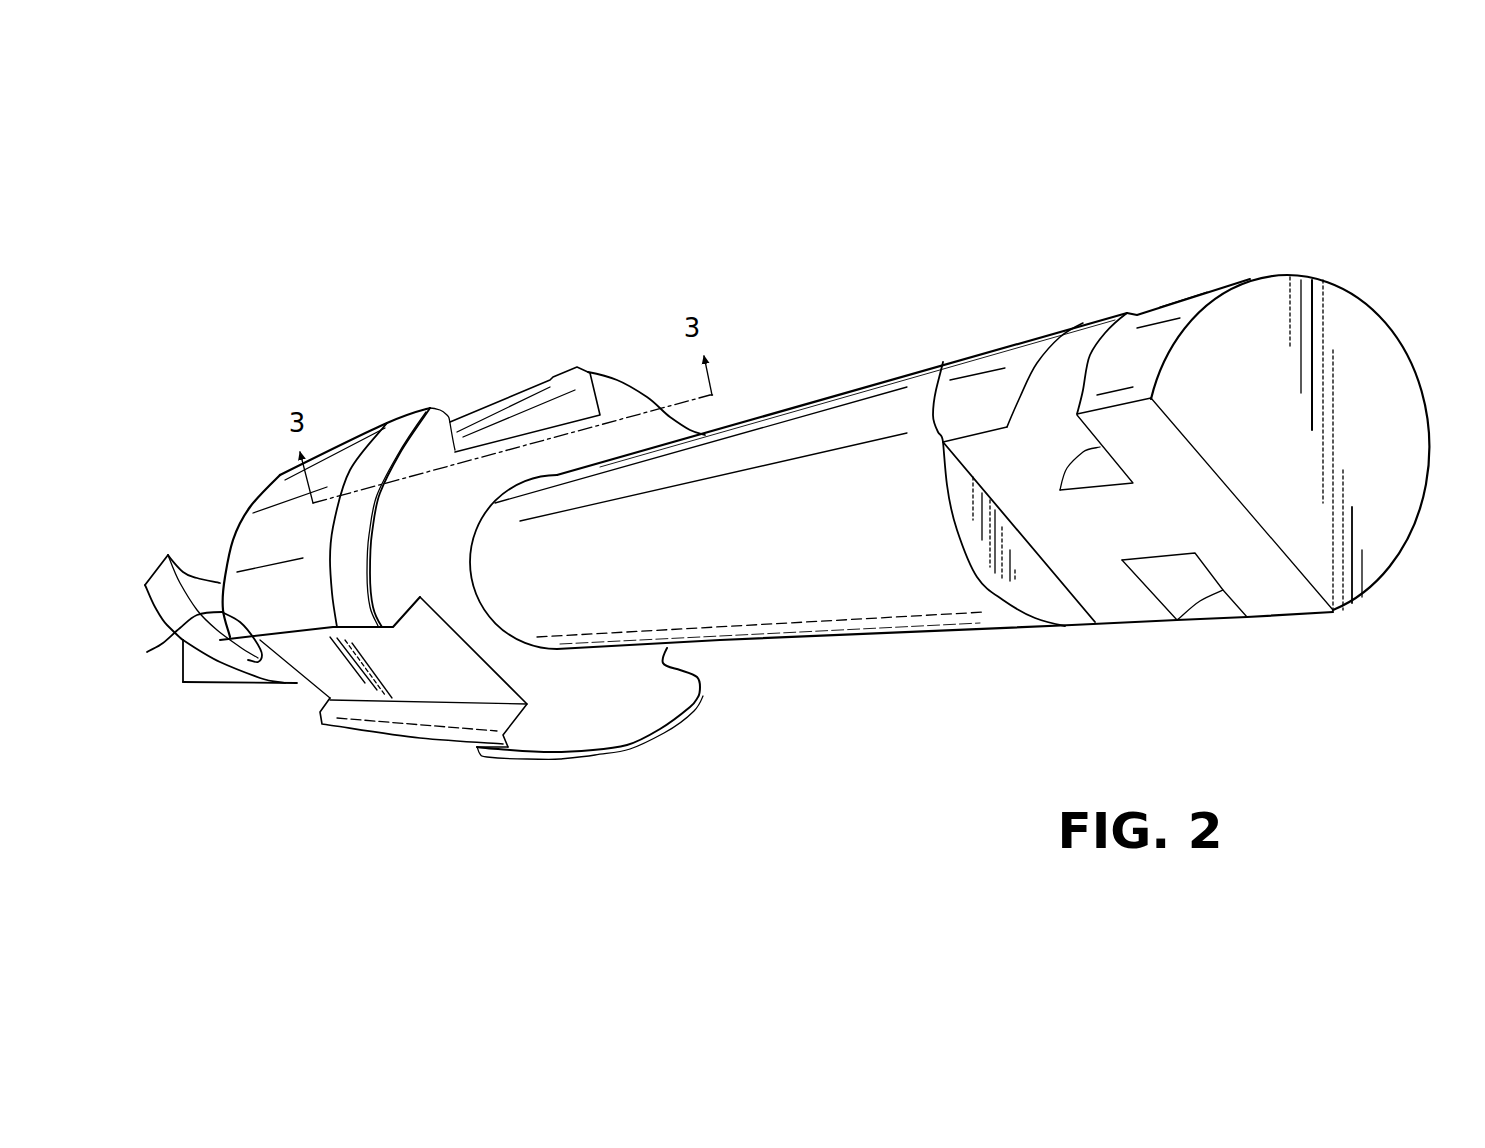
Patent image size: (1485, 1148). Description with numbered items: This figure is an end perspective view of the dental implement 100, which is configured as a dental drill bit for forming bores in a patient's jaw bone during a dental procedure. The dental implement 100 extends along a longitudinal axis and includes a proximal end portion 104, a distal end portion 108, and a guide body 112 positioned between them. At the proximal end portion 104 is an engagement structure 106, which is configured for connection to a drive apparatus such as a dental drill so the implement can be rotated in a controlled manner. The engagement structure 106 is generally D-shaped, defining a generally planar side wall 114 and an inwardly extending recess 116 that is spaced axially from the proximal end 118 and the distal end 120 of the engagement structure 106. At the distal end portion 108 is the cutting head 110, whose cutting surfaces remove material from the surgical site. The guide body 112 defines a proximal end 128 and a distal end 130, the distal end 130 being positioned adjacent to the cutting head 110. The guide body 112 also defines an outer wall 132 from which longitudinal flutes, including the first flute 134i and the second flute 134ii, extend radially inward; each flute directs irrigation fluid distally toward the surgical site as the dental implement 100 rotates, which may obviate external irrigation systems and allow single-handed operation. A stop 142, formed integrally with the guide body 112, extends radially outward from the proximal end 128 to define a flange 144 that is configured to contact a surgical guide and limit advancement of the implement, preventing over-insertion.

The dental implement 100 is at (797, 292).
The proximal end portion 104 is at (1414, 248).
The engagement structure 106 is at (1138, 284).
The distal end portion 108 is at (172, 715).
The cutting head 110 is at (148, 530).
The guide body 112 is at (328, 425).
The planar side wall 114 is at (1117, 527).
The recess 116 is at (1208, 609).
The proximal end of engagement structure 118 is at (1225, 287).
The distal end of engagement structure 120 is at (943, 362).
The proximal end of guide body 128 is at (637, 707).
The distal end of guide body 130 is at (147, 652).
The outer wall 132 is at (245, 533).
The first flute 134i is at (483, 395).
The second flute 134ii is at (297, 699).
The stop 142 is at (613, 758).
The flange 144 is at (474, 750).